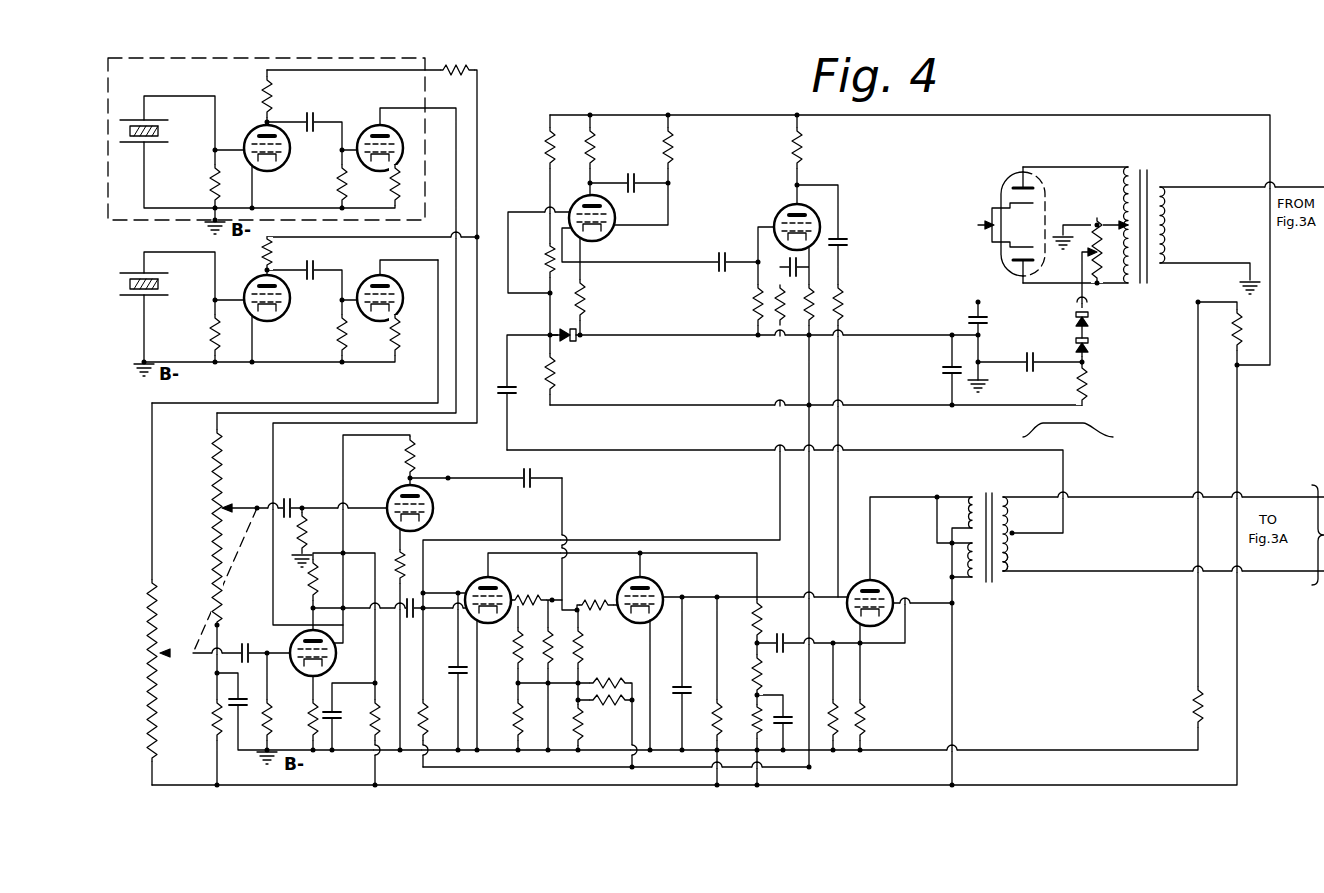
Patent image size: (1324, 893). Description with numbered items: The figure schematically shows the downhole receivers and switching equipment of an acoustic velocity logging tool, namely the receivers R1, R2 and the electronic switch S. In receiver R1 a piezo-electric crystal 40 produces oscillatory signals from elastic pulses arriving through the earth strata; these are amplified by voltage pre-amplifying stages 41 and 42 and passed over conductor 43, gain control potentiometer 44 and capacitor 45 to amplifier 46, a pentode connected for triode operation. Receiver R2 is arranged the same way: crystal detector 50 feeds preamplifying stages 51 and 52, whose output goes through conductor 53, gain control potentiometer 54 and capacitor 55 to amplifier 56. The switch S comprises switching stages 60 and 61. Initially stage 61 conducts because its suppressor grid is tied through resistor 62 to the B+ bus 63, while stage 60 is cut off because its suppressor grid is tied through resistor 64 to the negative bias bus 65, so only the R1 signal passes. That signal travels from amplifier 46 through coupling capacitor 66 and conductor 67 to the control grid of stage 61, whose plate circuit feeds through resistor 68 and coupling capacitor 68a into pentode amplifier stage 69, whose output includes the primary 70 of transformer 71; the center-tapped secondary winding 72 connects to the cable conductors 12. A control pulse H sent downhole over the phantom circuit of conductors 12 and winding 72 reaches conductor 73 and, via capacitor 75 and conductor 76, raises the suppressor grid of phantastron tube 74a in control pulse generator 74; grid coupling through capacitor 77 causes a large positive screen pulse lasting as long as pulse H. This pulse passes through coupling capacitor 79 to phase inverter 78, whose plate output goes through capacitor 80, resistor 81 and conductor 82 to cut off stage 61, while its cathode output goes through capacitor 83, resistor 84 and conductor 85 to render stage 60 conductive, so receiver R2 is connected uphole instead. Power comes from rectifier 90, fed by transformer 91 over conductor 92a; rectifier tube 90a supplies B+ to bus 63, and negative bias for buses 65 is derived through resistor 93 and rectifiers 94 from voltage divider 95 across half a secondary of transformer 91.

The conductors 12 is at (1133, 570).
The piezo-electric crystal 40 is at (152, 143).
The voltage pre-amplifying stage 41 is at (272, 127).
The voltage pre-amplifying stage 42 is at (377, 128).
The conductor 43 is at (478, 333).
The gain control potentiometer 44 is at (222, 488).
The capacitor 45 is at (289, 500).
The amplifier 46 is at (395, 490).
The piezo-electric crystal type detector 50 is at (152, 297).
The preamplifying stage 51 is at (283, 313).
The preamplifying stage 52 is at (368, 280).
The conductor 53 is at (207, 403).
The gain control potentiometer 54 is at (160, 598).
The capacitor 55 is at (250, 650).
The amplifier 56 is at (330, 661).
The switching stage 60 is at (507, 590).
The switching stage 61 is at (660, 590).
The resistor 62 is at (720, 728).
The B+ bus 63 is at (737, 787).
The resistor 64 is at (426, 730).
The bus 65 is at (487, 767).
The coupling capacitor 66 is at (538, 475).
The conductor 67 is at (565, 520).
The resistor 68 is at (754, 618).
The coupling capacitor 68a is at (778, 636).
The pentode amplifier stage 69 is at (885, 588).
The primary 70 is at (970, 500).
The transformer 71 is at (994, 495).
The secondary winding 72 is at (1013, 561).
The conductor 73 is at (717, 448).
The control pulse generator 74 is at (603, 162).
The phantastron tube 74a is at (612, 236).
The capacitor 75 is at (512, 387).
The conductor 76 is at (520, 210).
The capacitor 77 is at (637, 190).
The phase inverter 78 is at (781, 211).
The coupling capacitor 79 is at (720, 255).
The capacitor 80 is at (848, 240).
The resistor 81 is at (846, 310).
The conductor 82 is at (840, 497).
The capacitor 83 is at (800, 267).
The resistor 84 is at (786, 325).
The conductor 85 is at (778, 477).
The rectifier 90 is at (1020, 160).
The rectifier tube 90a is at (1000, 197).
The transformer 91 is at (1152, 180).
The conductor 92a is at (1225, 187).
The resistor 93 is at (1090, 385).
The rectifiers 94 is at (1089, 347).
The voltage divider 95 is at (1100, 223).
The receiver R1 is at (256, 49).
The receiver R2 is at (254, 270).
The switch S is at (573, 579).
The control pulse H is at (1068, 432).